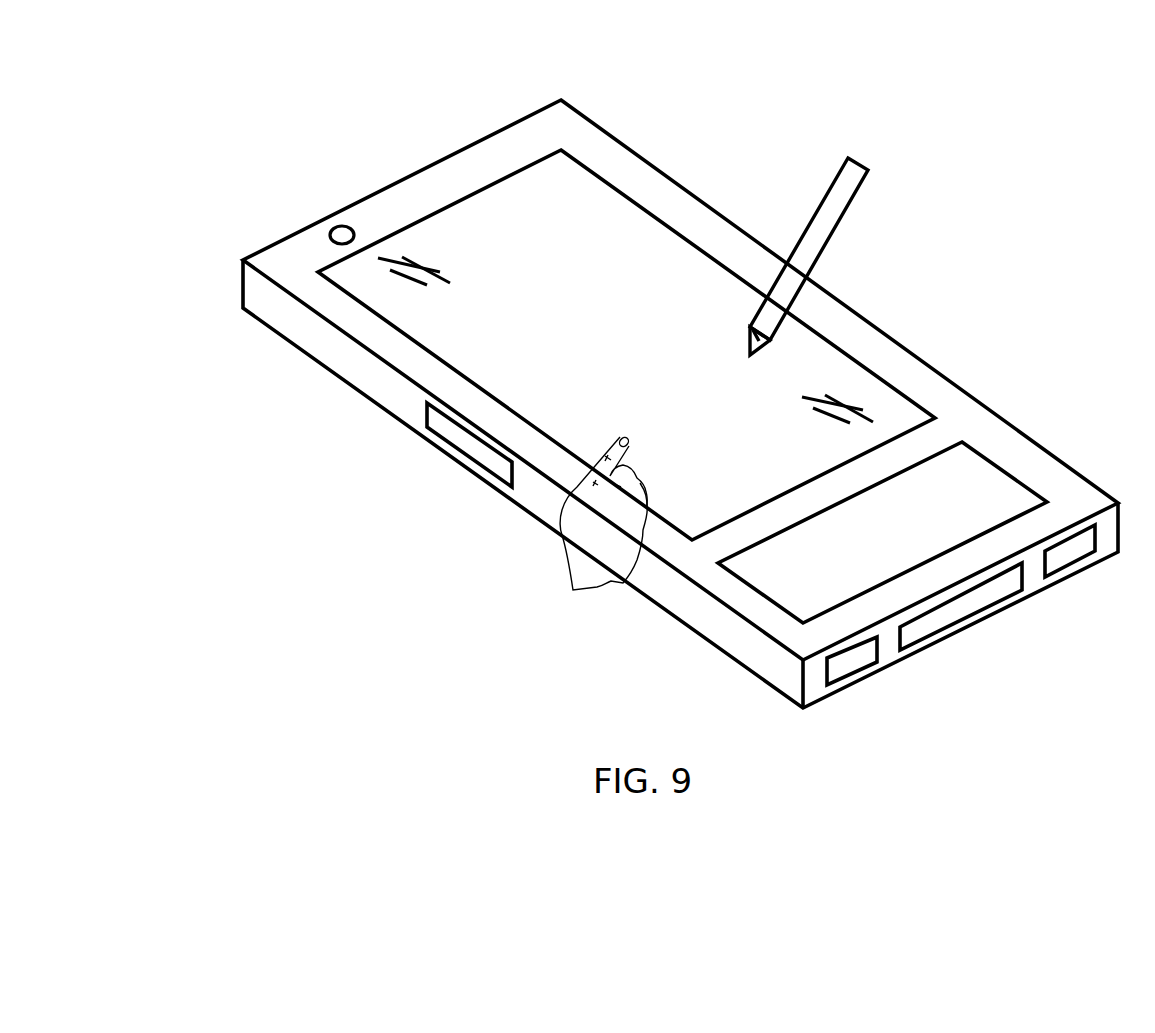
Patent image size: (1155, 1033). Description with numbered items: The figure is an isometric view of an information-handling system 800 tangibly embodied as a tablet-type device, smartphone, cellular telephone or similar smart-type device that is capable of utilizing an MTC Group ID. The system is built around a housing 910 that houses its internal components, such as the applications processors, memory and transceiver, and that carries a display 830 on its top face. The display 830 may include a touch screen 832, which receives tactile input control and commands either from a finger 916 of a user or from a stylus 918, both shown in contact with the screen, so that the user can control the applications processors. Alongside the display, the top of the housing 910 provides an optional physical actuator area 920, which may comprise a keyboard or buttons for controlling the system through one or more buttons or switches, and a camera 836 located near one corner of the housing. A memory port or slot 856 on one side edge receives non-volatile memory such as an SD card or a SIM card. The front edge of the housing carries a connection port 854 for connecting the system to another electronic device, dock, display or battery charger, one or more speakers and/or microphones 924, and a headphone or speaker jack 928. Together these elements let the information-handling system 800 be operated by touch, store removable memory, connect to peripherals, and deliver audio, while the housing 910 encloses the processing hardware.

The information-handling system 800 is at (695, 136).
The housing 910 is at (500, 130).
The display 830 is at (534, 213).
The touch screen 832 is at (656, 348).
The camera 836 is at (337, 221).
The finger 916 is at (620, 438).
The stylus 918 is at (829, 192).
The physical actuator area 920 is at (973, 490).
The speakers and/or microphones 924 is at (1070, 560).
The headphone or speaker jack 928 is at (268, 245).
The connection port 854 is at (977, 613).
The memory port or slot 856 is at (463, 442).